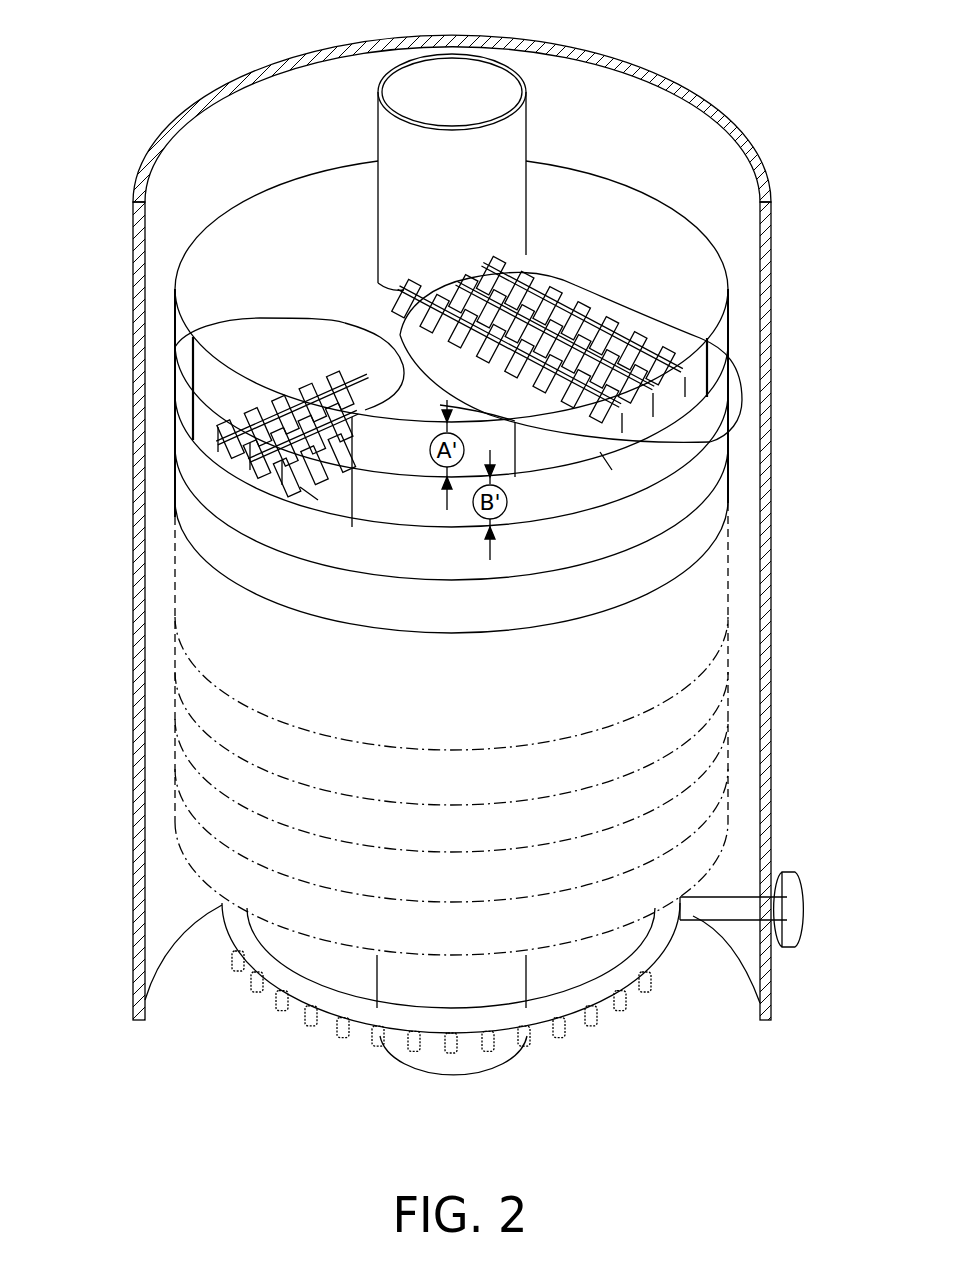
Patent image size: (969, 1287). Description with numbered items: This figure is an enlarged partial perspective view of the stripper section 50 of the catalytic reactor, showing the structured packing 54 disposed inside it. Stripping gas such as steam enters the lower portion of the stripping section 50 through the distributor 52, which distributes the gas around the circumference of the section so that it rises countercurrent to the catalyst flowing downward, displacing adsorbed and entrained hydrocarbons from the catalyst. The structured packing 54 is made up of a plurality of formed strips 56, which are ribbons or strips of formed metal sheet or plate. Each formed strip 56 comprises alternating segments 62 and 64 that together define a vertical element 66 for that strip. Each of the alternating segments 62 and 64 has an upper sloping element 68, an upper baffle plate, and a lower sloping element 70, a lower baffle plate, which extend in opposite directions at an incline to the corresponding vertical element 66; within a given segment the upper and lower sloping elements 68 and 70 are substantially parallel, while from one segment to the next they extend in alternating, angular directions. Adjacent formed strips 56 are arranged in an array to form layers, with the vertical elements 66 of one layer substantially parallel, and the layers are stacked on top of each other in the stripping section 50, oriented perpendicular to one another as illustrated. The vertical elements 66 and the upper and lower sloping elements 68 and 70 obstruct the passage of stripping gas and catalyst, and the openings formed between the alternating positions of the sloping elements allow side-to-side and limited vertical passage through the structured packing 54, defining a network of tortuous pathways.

The stripping section 50 is at (119, 492).
The distributor 52 is at (612, 990).
The structured packing 54 is at (738, 440).
The formed strips 56 is at (463, 431).
The alternating segment 62 is at (345, 450).
The alternating segment 64 is at (352, 522).
The vertical element 66 is at (243, 480).
The upper sloping element 68 is at (320, 380).
The lower sloping element 70 is at (489, 400).